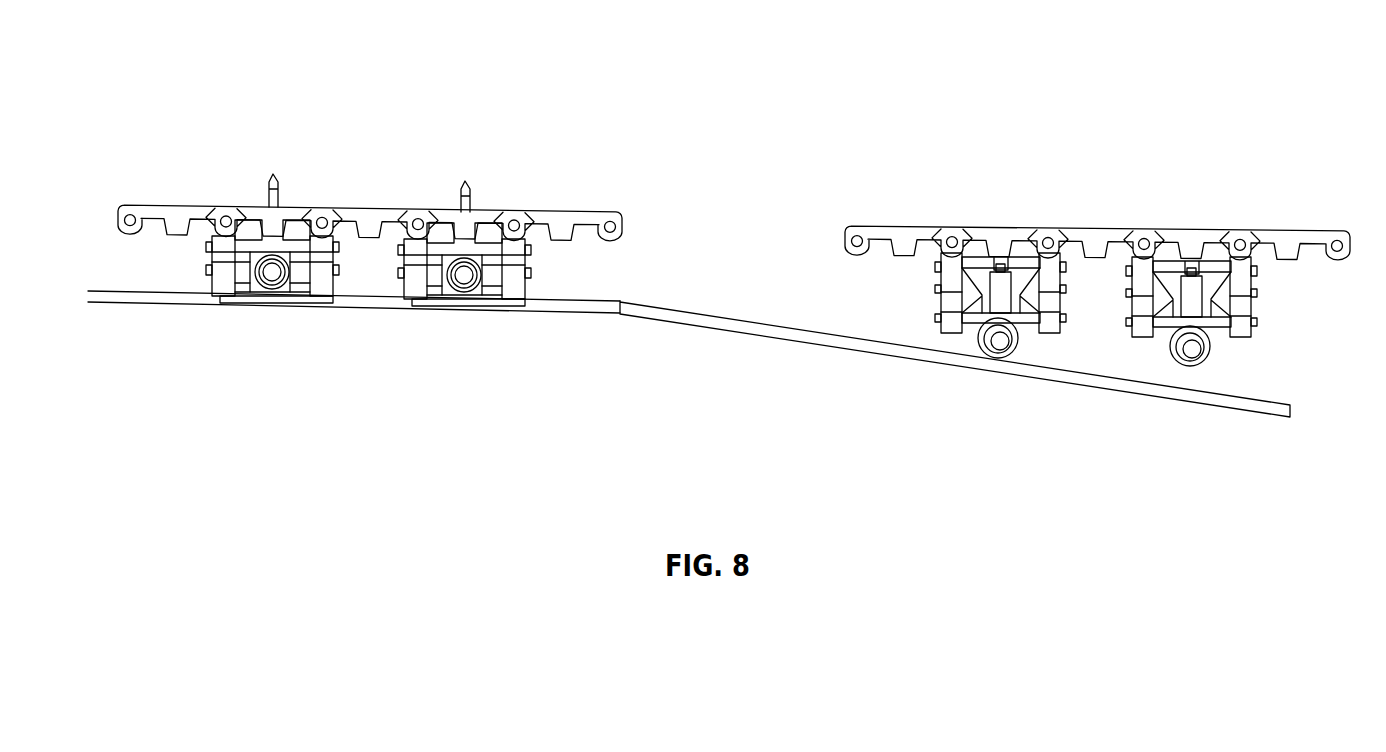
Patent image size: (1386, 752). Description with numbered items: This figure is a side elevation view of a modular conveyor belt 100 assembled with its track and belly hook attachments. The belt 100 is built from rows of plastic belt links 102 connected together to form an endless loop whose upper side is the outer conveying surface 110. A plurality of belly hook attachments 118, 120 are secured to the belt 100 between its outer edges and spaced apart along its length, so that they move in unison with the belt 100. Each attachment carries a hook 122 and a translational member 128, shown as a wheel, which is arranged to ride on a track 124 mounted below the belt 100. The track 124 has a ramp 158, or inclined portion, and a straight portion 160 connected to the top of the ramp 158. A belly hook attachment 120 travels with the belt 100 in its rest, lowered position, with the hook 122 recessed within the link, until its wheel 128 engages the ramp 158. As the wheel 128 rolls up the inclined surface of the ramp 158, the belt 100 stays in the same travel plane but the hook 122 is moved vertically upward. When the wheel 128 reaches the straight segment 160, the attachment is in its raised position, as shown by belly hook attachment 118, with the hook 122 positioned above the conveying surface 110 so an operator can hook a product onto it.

The modular conveyor belt 100 is at (749, 187).
The belt link 102 is at (170, 205).
The outer conveying surface 110 is at (749, 164).
The belly hook attachment 118 is at (318, 288).
The belly hook attachment 120 is at (950, 282).
The hook 122 is at (288, 189).
The track 124 is at (707, 332).
The translational member 128 is at (262, 282).
The ramp 158 is at (843, 342).
The straight portion 160 is at (150, 298).